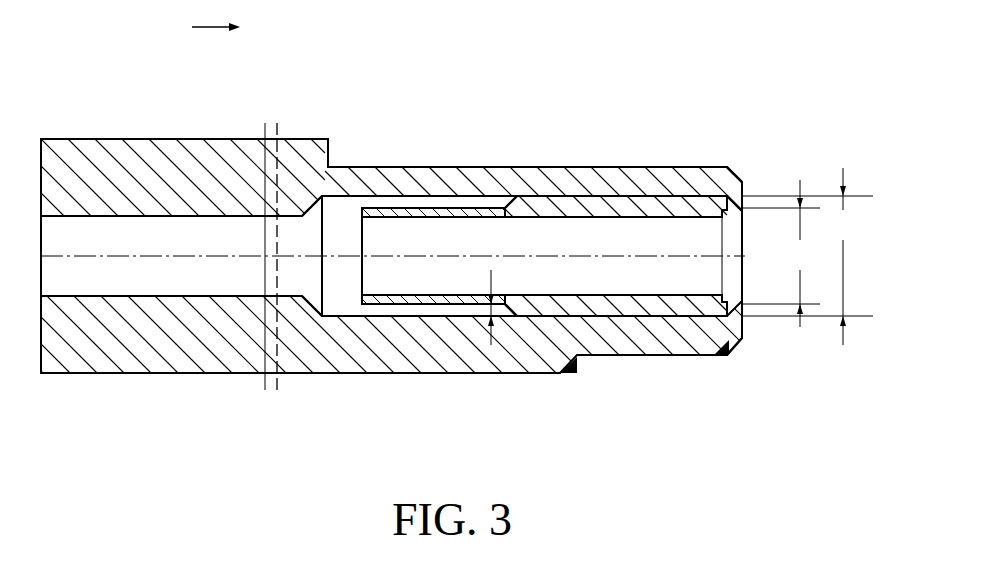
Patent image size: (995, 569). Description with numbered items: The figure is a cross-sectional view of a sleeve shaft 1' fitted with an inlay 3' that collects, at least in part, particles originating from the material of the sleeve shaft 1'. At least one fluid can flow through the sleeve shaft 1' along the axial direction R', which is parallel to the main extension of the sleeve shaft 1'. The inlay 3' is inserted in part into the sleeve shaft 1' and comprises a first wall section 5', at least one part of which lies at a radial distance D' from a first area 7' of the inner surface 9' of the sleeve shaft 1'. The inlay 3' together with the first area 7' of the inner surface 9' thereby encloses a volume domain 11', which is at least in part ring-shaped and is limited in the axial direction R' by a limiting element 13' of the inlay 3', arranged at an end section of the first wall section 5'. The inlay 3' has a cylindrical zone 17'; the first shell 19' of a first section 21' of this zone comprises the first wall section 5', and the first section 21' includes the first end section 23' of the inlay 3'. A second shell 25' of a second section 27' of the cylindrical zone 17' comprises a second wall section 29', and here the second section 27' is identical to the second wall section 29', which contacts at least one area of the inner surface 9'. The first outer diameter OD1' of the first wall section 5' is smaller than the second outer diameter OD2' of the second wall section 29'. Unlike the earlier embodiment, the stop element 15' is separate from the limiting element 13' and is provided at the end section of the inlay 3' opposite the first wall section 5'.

The sleeve shaft 1' is at (393, 208).
The inlay 3' is at (770, 354).
The first wall section 5' is at (439, 375).
The first area 7' is at (433, 261).
The inner surface 9' is at (303, 325).
The volume domain 11' is at (413, 379).
The limiting element 13' is at (496, 191).
The stop element 15' is at (764, 127).
The cylindrical zone 17' is at (623, 303).
The first shell 19' is at (413, 137).
The first section 21' is at (433, 185).
The first end section 23' is at (295, 191).
The second shell 25' is at (527, 132).
The second section 27' is at (622, 132).
The second wall section 29' is at (616, 191).
The radial distance D' is at (507, 303).
The first outer diameter OD1' is at (788, 253).
The second outer diameter OD2' is at (811, 256).
The axial direction R' is at (216, 15).